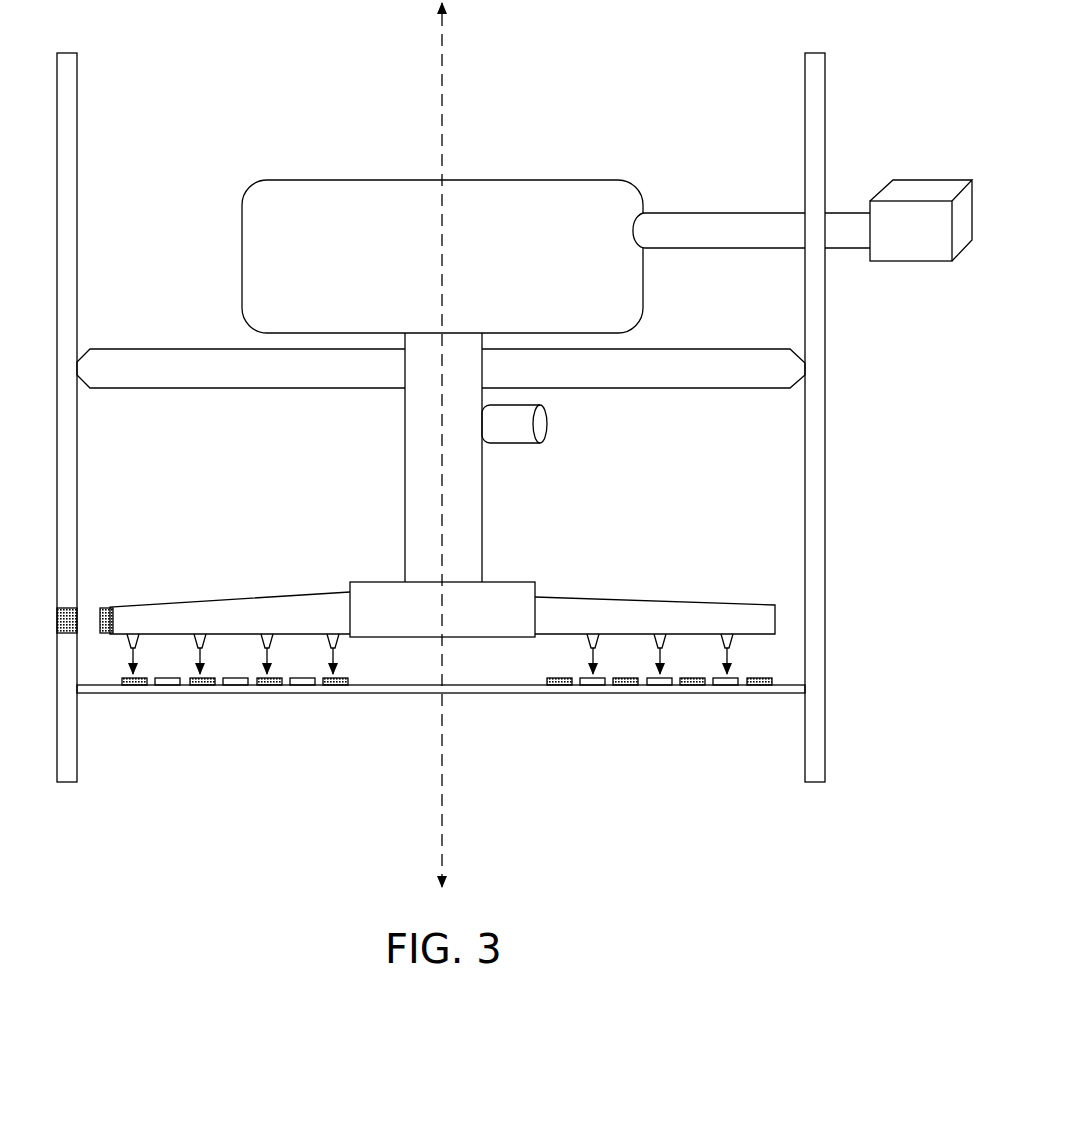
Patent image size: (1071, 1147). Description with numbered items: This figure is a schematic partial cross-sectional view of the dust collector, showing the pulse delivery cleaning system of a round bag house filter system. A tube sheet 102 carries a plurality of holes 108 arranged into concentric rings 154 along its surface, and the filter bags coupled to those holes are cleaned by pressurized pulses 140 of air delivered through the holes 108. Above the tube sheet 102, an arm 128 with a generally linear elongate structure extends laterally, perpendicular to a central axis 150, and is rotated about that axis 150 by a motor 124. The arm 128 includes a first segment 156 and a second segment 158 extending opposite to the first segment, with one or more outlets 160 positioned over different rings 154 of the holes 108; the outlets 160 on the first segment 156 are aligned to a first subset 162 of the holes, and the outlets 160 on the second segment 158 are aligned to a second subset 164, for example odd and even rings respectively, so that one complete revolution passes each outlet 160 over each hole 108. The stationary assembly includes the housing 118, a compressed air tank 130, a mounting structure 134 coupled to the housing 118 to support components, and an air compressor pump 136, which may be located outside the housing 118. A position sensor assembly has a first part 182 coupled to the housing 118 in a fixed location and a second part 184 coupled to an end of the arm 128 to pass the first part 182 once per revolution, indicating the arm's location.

The tube sheet 102 is at (775, 695).
The holes 108 is at (781, 678).
The housing 118 is at (803, 58).
The motor 124 is at (533, 447).
The arm 128 is at (781, 619).
The compressed air tank 130 is at (270, 180).
The mounting structure 134 is at (771, 394).
The air compressor pump 136 is at (933, 190).
The pressurized pulses 140 is at (353, 668).
The central axis 150 is at (440, 118).
The concentric rings 154 is at (342, 707).
The first segment 156 is at (264, 596).
The second segment 158 is at (624, 599).
The outlets 160 is at (751, 647).
The first subset 162 is at (134, 693).
The second subset 164 is at (591, 693).
The first part 182 is at (77, 606).
The second part 184 is at (107, 607).